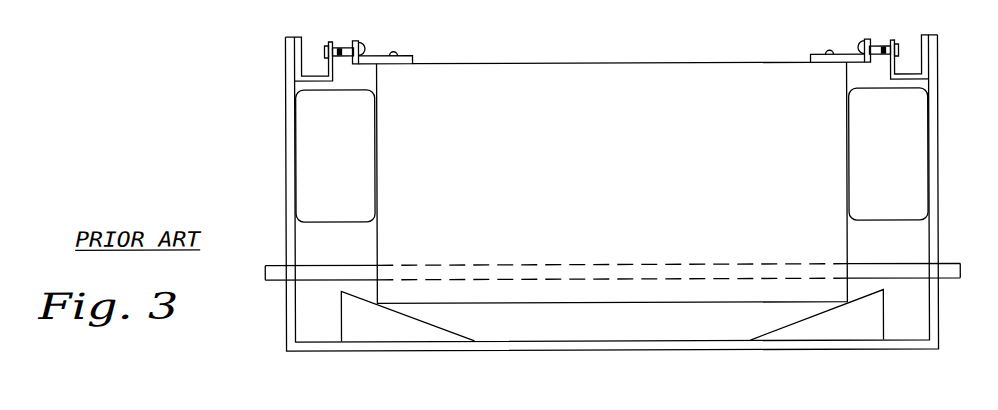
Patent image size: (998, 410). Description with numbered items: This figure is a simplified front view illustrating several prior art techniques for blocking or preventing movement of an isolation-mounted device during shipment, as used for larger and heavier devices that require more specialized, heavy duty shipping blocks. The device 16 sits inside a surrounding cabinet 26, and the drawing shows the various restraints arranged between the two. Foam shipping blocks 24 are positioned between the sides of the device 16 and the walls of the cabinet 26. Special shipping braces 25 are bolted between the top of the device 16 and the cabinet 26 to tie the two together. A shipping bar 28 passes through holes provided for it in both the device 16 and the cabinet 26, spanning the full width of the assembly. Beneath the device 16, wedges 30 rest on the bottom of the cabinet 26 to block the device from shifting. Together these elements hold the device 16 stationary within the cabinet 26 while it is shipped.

The device 16 is at (615, 138).
The foam shipping blocks 24 is at (355, 163).
The special shipping braces 25 is at (373, 55).
The cabinet 26 is at (285, 82).
The shipping bars 28 is at (265, 266).
The wedges 30 is at (375, 322).